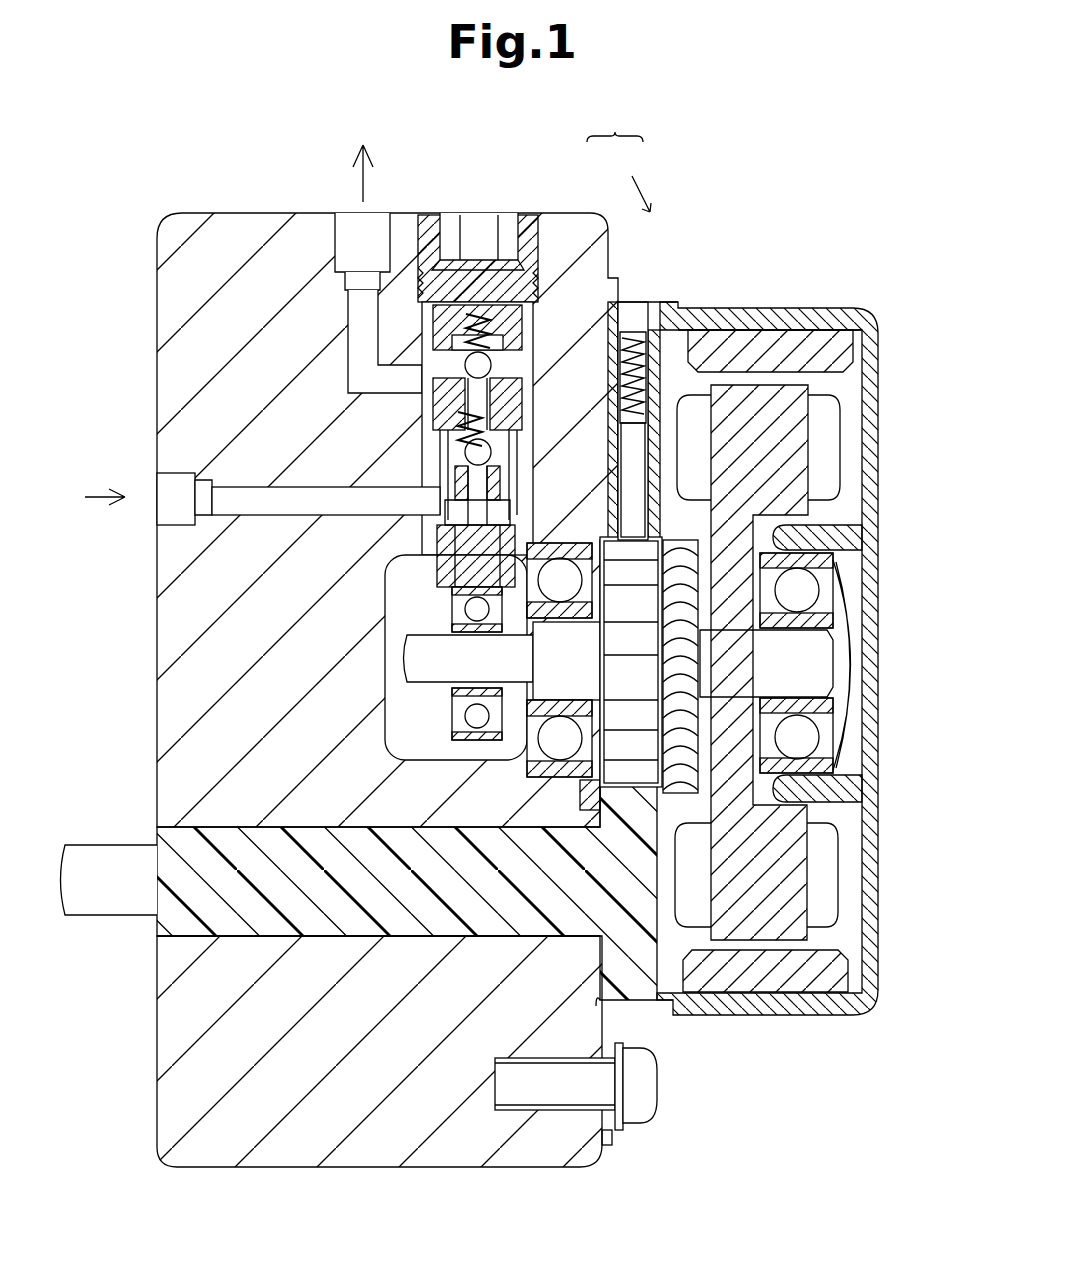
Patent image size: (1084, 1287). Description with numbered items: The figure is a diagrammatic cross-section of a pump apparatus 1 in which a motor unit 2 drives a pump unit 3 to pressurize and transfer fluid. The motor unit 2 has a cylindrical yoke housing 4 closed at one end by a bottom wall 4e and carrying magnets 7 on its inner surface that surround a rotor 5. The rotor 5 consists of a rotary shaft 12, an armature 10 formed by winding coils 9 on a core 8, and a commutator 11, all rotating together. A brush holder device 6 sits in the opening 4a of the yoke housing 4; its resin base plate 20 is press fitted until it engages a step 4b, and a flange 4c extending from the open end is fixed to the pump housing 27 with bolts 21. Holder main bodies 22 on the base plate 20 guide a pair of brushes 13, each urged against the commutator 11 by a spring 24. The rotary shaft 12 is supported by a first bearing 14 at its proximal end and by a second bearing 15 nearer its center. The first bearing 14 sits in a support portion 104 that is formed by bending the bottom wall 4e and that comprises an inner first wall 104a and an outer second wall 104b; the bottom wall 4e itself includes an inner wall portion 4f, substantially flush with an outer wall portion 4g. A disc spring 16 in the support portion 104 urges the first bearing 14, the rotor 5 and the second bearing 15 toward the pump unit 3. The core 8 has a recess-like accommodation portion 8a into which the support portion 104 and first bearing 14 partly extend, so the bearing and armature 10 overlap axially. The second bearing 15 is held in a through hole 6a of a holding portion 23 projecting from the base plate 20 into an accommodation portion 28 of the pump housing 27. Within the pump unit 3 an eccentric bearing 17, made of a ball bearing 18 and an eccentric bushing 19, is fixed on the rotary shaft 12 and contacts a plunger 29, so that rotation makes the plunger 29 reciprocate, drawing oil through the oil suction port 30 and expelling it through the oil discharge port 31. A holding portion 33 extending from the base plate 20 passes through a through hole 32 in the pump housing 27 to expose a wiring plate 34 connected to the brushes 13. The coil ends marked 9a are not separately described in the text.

The pump apparatus 1 is at (615, 122).
The motor unit 2 is at (637, 177).
The pump unit 3 is at (576, 188).
The yoke housing 4 is at (738, 1014).
The opening 4a is at (599, 1002).
The step 4b is at (654, 1003).
The flange 4c is at (610, 1142).
The bottom wall 4e is at (868, 780).
The inner wall portion 4f is at (864, 748).
The outer wall portion 4g is at (922, 755).
The rotor 5 is at (797, 379).
The brush holder device 6 is at (598, 353).
The through hole 6a is at (581, 780).
The magnets 7 is at (807, 998).
The core 8 is at (850, 420).
The accommodation portion 8a is at (770, 798).
The coils 9 is at (850, 452).
The coil end 9a is at (852, 504).
The armature 10 is at (855, 406).
The commutator 11 is at (597, 526).
The rotary shaft 12 is at (847, 674).
The brushes 13 is at (612, 447).
The first bearing 14 is at (808, 767).
The second bearing 15 is at (529, 779).
The disc spring 16 is at (851, 604).
The eccentric bearing 17 is at (395, 671).
The ball bearing 18 is at (440, 697).
The eccentric bushing 19 is at (440, 730).
The base plate 20 is at (608, 383).
The bolts 21 is at (658, 1086).
The holder main bodies 22 is at (665, 329).
The holding portion 23 is at (564, 544).
The spring 24 is at (629, 342).
The pump housing 27 is at (293, 1167).
The accommodation portion 28 is at (400, 653).
The plunger 29 is at (440, 550).
The oil suction port 30 is at (158, 475).
The oil discharge port 31 is at (345, 215).
The through hole 32 is at (157, 935).
The holding portion 33 is at (168, 826).
The wiring plate 34 is at (91, 845).
The support portion 104 is at (869, 547).
The first wall 104a is at (848, 550).
The second wall 104b is at (858, 521).